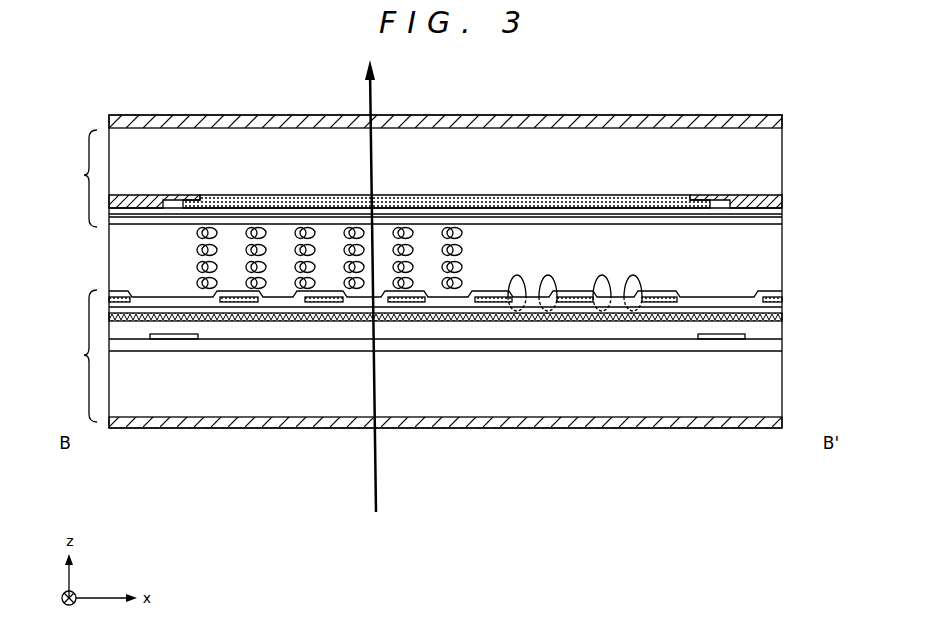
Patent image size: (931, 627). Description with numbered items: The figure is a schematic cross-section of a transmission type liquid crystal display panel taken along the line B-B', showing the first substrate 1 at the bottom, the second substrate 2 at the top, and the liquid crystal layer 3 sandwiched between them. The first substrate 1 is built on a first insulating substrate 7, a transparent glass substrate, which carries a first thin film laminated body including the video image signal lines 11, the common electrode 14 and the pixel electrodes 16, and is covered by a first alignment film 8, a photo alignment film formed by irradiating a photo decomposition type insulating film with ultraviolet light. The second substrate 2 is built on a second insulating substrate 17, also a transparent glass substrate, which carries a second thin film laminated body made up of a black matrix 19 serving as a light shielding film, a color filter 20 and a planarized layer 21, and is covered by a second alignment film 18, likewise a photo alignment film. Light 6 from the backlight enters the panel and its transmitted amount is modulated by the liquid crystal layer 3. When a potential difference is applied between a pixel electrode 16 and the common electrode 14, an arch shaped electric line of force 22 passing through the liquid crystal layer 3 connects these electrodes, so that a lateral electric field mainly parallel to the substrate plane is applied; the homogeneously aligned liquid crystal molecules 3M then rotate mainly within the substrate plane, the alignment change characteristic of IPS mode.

The first substrate 1 is at (83, 356).
The second substrate 2 is at (83, 178).
The liquid crystal layer 3 is at (123, 258).
The liquid crystal molecule 3M is at (306, 230).
The light 6 is at (386, 503).
The first insulating substrate 7 is at (770, 382).
The first alignment film 8 is at (717, 297).
The video image signal line 11 is at (178, 339).
The common electrode 14 is at (783, 319).
The pixel electrode 16 is at (325, 302).
The second insulating substrate 17 is at (337, 147).
The second alignment film 18 is at (776, 224).
The black matrix 19 is at (166, 196).
The color filter 20 is at (522, 194).
The planarized layer 21 is at (641, 210).
The electric line of force 22 is at (581, 273).